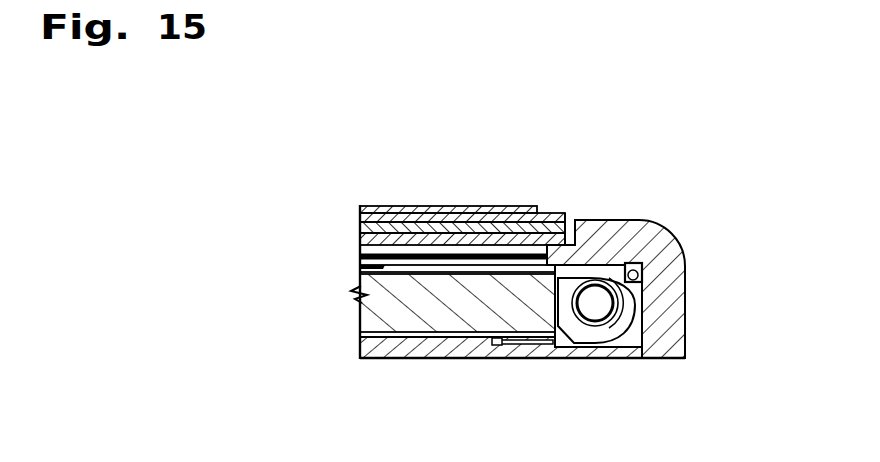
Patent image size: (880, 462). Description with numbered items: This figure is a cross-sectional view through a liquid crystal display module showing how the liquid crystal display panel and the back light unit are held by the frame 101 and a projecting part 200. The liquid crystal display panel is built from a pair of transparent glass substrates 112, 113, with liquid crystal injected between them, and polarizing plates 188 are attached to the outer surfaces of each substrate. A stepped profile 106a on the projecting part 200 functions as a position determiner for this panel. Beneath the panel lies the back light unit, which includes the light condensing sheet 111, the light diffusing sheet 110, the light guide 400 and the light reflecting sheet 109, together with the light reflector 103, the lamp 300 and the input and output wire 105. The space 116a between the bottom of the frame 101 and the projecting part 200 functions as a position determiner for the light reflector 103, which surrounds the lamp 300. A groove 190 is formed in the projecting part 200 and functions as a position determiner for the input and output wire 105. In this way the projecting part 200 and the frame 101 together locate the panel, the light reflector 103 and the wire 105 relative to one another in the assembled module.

The polarizing plates 188 is at (388, 206).
The transparent glass substrate 112 is at (448, 224).
The transparent glass substrate 113 is at (495, 236).
The projecting part 200 is at (566, 248).
The stepped profile 106a is at (594, 224).
The groove 190 is at (640, 266).
The input and output wire 105 is at (648, 264).
The light condensing sheet 111 is at (366, 254).
The light diffusing sheet 110 is at (376, 270).
The space 116a is at (662, 312).
The light guide 400 is at (407, 308).
The light reflecting sheet 109 is at (420, 340).
The frame 101 is at (497, 348).
The lamp 300 is at (596, 312).
The light reflector 103 is at (643, 357).